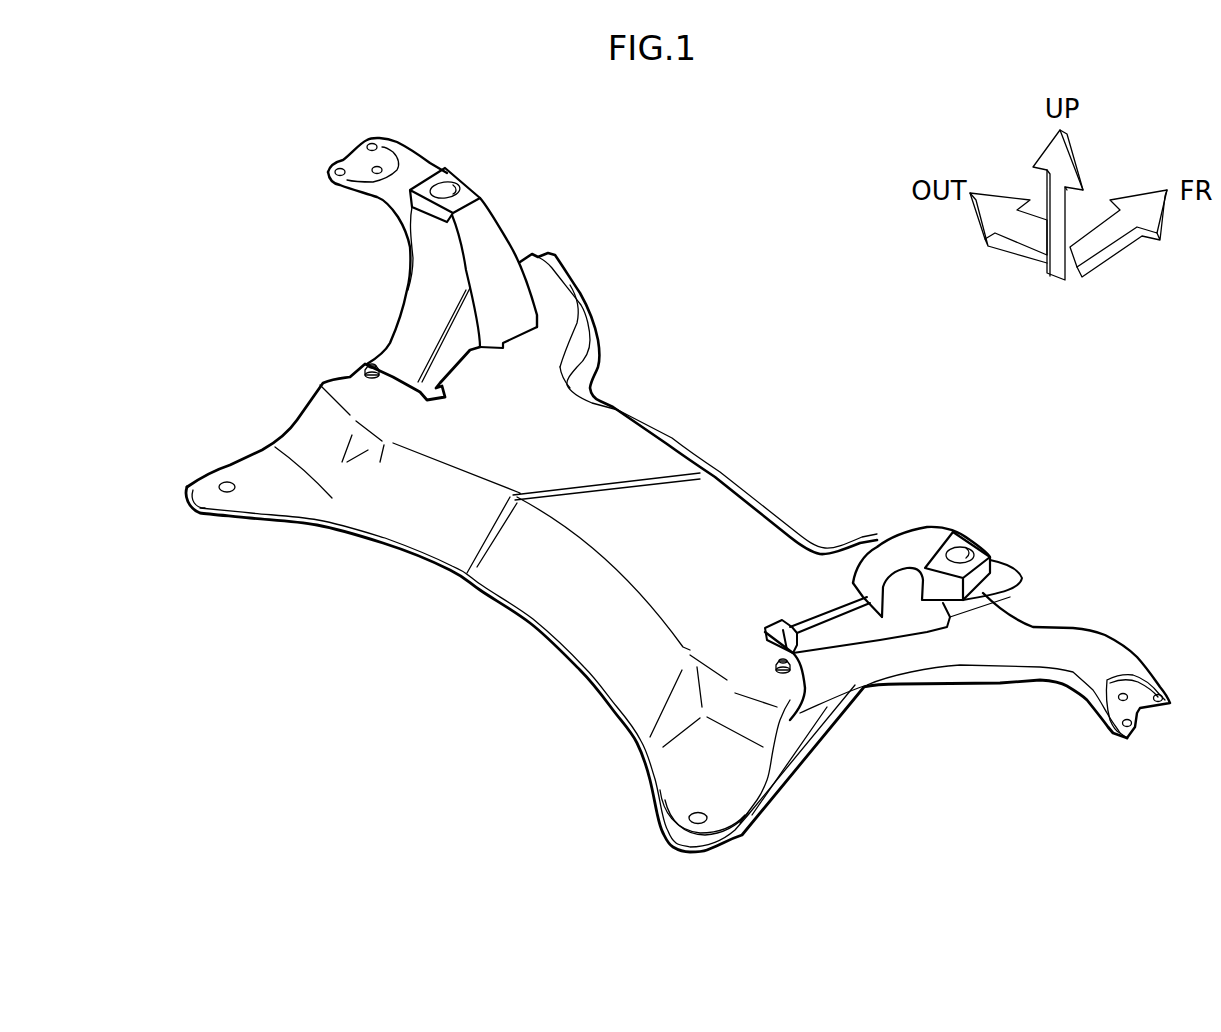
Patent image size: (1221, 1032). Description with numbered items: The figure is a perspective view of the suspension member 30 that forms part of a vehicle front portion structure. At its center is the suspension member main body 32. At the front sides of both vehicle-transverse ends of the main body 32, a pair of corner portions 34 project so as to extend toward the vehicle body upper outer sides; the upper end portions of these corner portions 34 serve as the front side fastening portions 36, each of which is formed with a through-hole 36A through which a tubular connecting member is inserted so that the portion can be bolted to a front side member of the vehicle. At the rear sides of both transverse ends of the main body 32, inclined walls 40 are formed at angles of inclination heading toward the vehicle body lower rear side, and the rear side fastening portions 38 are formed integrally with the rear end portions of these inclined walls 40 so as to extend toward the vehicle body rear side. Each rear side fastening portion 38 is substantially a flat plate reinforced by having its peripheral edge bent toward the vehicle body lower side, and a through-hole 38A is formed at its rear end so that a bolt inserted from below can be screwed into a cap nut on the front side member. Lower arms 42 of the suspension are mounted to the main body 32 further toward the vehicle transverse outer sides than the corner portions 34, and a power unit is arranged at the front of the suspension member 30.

The suspension member 30 is at (765, 368).
The suspension member main body 32 is at (697, 513).
The corner portions 34 is at (493, 227).
The front side fastening portions 36 is at (443, 177).
The through-holes 36A is at (462, 190).
The rear side fastening portions 38 is at (217, 492).
The through-hole 38A is at (227, 480).
The inclined walls 40 is at (297, 430).
The lower arms 42 is at (410, 157).